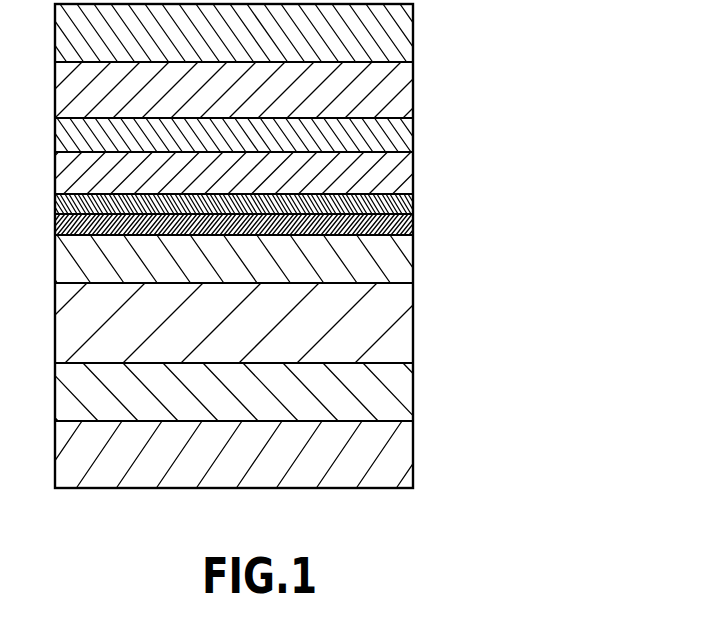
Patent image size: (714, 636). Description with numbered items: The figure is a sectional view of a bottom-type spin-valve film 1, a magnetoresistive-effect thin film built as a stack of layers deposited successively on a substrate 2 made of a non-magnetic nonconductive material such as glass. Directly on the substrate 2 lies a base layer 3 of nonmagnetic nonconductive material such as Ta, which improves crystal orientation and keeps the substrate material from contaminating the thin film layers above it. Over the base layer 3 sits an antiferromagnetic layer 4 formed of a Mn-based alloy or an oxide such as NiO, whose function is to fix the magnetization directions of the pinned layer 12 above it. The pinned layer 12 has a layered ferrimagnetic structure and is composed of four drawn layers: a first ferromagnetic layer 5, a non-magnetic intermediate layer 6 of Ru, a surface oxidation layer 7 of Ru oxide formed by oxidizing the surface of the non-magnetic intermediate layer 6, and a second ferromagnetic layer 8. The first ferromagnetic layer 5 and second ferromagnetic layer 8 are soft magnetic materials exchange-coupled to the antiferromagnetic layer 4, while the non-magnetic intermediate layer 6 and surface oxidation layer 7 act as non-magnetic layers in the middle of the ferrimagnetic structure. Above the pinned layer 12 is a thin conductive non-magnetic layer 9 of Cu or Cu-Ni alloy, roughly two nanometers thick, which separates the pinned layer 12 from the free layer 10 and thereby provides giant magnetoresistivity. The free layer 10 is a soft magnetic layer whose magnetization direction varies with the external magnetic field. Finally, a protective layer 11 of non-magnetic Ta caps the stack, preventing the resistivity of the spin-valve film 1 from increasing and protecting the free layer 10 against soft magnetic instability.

The spin-valve film 1 is at (534, 86).
The substrate 2 is at (413, 450).
The base layer 3 is at (413, 390).
The antiferromagnetic layer 4 is at (413, 322).
The first ferromagnetic layer 5 is at (413, 267).
The non-magnetic intermediate layer 6 is at (413, 228).
The surface oxidation layer 7 is at (413, 205).
The second ferromagnetic layer 8 is at (413, 172).
The non-magnetic layer 9 is at (413, 135).
The free layer 10 is at (413, 88).
The protective layer 11 is at (413, 35).
The pinned layer 12 is at (490, 150).